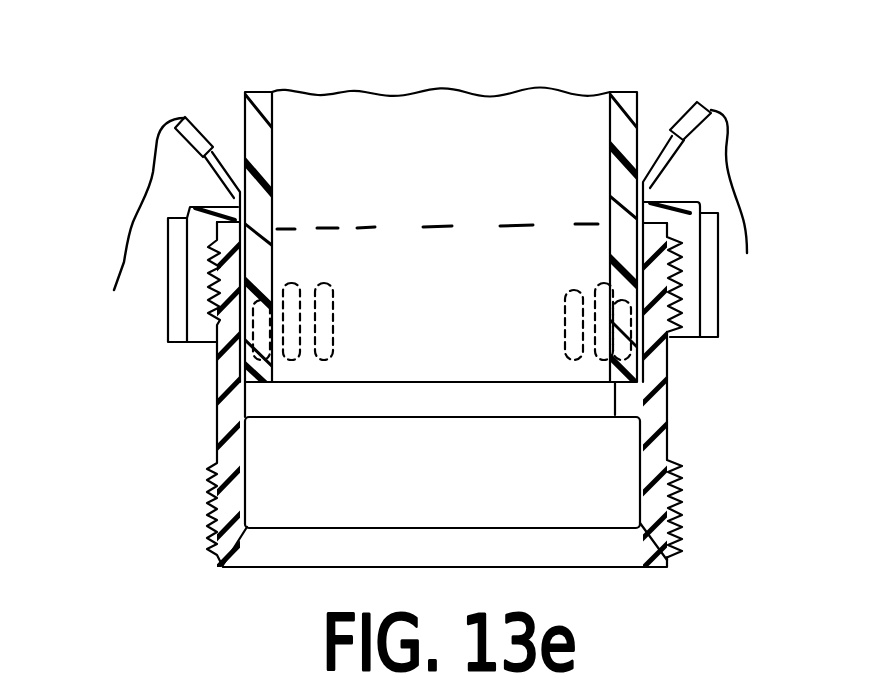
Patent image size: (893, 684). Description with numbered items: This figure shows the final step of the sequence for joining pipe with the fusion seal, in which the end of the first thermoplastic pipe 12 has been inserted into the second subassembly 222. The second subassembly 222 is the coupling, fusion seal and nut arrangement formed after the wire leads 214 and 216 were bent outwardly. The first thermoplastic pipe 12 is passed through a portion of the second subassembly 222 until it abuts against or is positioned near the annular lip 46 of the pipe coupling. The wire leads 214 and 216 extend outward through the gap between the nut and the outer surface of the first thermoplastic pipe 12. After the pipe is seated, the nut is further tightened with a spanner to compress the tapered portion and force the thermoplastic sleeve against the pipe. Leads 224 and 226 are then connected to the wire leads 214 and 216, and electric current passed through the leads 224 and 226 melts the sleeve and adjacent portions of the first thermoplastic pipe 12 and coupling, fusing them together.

The first thermoplastic pipe 12 is at (247, 117).
The wire lead 214 is at (233, 166).
The wire lead 216 is at (655, 140).
The second subassembly 222 is at (175, 462).
The lead 224 is at (127, 240).
The lead 226 is at (737, 167).
The annular lip 46 is at (268, 392).